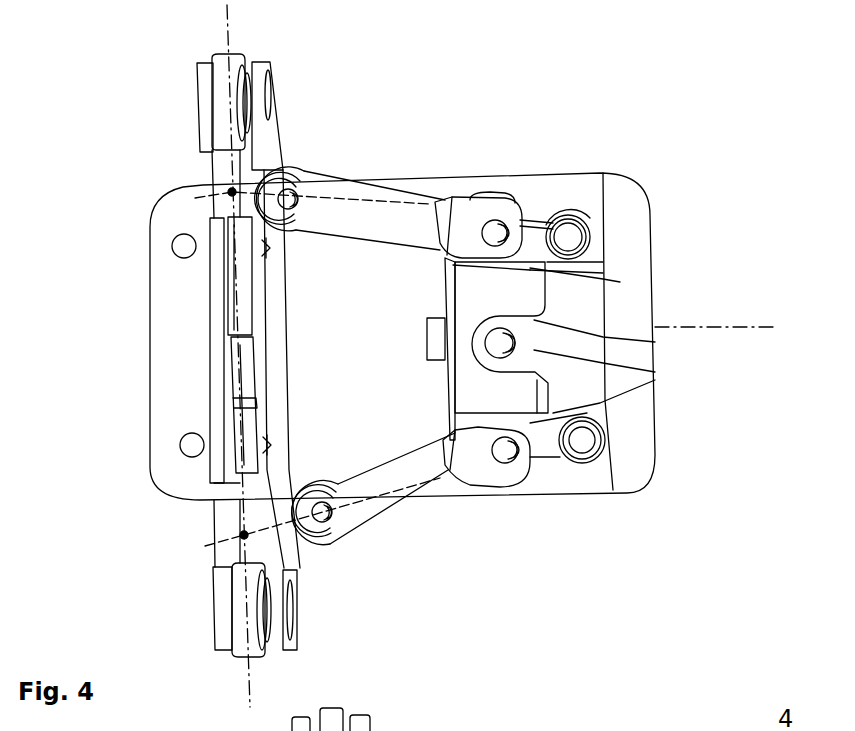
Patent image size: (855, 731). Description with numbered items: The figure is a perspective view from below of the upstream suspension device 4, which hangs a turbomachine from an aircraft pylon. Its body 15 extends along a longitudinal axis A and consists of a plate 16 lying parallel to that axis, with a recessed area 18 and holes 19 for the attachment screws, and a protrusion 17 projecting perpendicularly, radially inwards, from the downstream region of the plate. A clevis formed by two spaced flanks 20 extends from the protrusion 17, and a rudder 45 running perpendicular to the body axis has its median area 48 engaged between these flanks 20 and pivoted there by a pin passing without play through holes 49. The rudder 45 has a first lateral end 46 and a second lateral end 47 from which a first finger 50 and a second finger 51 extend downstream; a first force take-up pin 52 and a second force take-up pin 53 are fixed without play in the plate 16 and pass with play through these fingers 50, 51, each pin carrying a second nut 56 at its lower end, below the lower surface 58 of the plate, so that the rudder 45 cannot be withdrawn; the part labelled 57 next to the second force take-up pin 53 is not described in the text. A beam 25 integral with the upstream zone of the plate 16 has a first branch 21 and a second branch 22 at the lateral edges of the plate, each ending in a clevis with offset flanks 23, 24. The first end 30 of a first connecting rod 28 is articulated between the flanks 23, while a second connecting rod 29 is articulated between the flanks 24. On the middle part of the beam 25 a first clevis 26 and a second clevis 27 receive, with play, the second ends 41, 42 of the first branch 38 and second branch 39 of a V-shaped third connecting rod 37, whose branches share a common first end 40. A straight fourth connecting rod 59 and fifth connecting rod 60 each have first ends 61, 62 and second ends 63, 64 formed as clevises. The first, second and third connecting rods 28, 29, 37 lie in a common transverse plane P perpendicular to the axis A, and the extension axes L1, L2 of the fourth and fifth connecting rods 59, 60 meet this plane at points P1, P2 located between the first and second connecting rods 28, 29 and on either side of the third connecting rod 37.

The upstream suspension device 4 is at (688, 165).
The body 15 is at (348, 336).
The plate 16 is at (173, 330).
The protrusion 17 is at (620, 310).
The recessed area 18 is at (427, 333).
The holes 19 is at (192, 445).
The flanks 20 is at (655, 342).
The first branch 21 is at (227, 523).
The second branch 22 is at (222, 160).
The flanks 23 is at (220, 620).
The flanks 24 is at (199, 93).
The beam 25 is at (263, 298).
The first clevis 26 is at (263, 445).
The second clevis 27 is at (258, 248).
The first connecting rod 28 is at (257, 670).
The second connecting rod 29 is at (220, 55).
The first end 30 is at (332, 717).
The third connecting rod 37 is at (159, 405).
The first branch 38 is at (233, 403).
The second branch 39 is at (230, 290).
The first end 40 is at (240, 358).
The second end 41 is at (228, 485).
The second end 42 is at (227, 255).
The rudder 45 is at (472, 293).
The first lateral end 46 is at (500, 477).
The second lateral end 47 is at (500, 203).
The median area 48 is at (443, 372).
The holes 49 is at (650, 370).
The first finger 50 is at (543, 445).
The second finger 51 is at (542, 230).
The first force take-up pin 52 is at (580, 440).
The second force take-up pin 53 is at (573, 238).
The second nut 56 is at (572, 214).
The housing edge 57 is at (603, 258).
The lower surface 58 is at (427, 192).
The fourth connecting rod 59 is at (400, 480).
The fifth connecting rod 60 is at (380, 208).
The first end 61 is at (477, 463).
The first end 62 is at (476, 220).
The second end 63 is at (353, 500).
The second end 64 is at (308, 192).
The transverse plane P is at (230, 22).
The point of intersection P1 is at (244, 535).
The point of intersection P2 is at (232, 192).
The extension axis L1 is at (273, 527).
The extension axis L2 is at (200, 196).
The longitudinal axis A is at (760, 327).